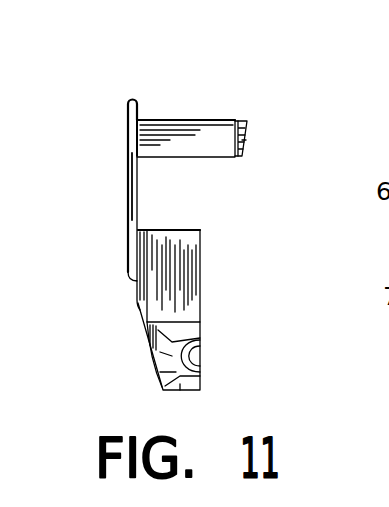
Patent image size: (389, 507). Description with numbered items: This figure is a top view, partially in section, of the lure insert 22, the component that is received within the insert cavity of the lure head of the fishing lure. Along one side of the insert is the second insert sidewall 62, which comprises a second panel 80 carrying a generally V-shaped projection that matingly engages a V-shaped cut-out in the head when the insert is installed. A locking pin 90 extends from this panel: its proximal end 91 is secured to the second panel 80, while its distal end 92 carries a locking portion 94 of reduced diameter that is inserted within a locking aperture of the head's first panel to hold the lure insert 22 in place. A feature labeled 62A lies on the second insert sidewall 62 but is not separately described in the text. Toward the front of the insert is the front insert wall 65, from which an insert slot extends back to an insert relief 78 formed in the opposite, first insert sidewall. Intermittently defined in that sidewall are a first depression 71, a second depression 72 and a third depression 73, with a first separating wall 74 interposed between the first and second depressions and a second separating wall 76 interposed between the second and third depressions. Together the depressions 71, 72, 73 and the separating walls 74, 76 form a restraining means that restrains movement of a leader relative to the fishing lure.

The lure insert 22 is at (282, 83).
The second panel 80 is at (130, 168).
The locking pin 90 is at (192, 118).
The proximal end 91 is at (143, 120).
The distal end 92 is at (248, 121).
The locking portion 94 is at (247, 132).
The insert relief 78 is at (190, 270).
The second insert sidewall 62 is at (133, 283).
The flange tab 62A is at (135, 305).
The front insert wall 65 is at (165, 388).
The third depression 73 is at (200, 328).
The second separating wall 76 is at (200, 343).
The second depression 72 is at (200, 360).
The first separating wall 74 is at (200, 375).
The first depression 71 is at (188, 386).